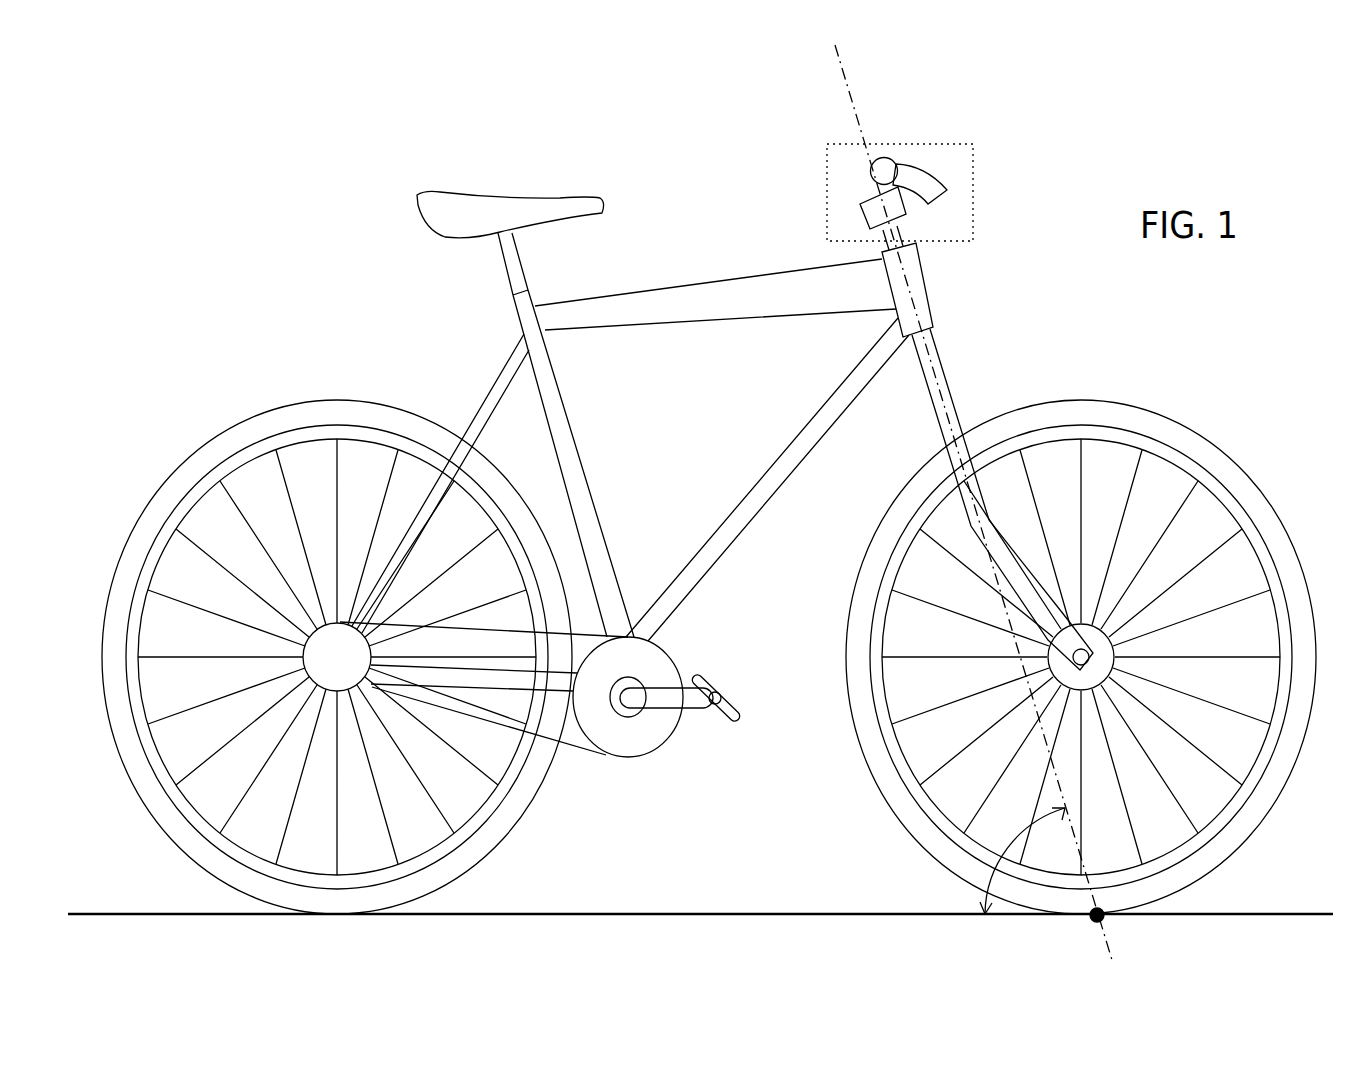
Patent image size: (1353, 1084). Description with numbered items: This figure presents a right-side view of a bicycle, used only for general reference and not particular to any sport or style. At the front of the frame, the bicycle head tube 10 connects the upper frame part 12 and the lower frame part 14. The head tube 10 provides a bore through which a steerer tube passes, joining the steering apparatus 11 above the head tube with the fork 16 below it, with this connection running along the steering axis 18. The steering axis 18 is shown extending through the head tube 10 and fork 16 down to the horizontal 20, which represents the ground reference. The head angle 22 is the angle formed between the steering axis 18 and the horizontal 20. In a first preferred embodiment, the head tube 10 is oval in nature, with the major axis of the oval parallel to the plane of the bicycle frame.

The head tube 10 is at (927, 303).
The steering apparatus 11 is at (979, 172).
The upper frame part 12 is at (703, 283).
The lower frame part 14 is at (829, 428).
The fork 16 is at (951, 395).
The steering axis 18 is at (849, 81).
The horizontal 20 is at (1251, 906).
The head angle 22 is at (1000, 870).